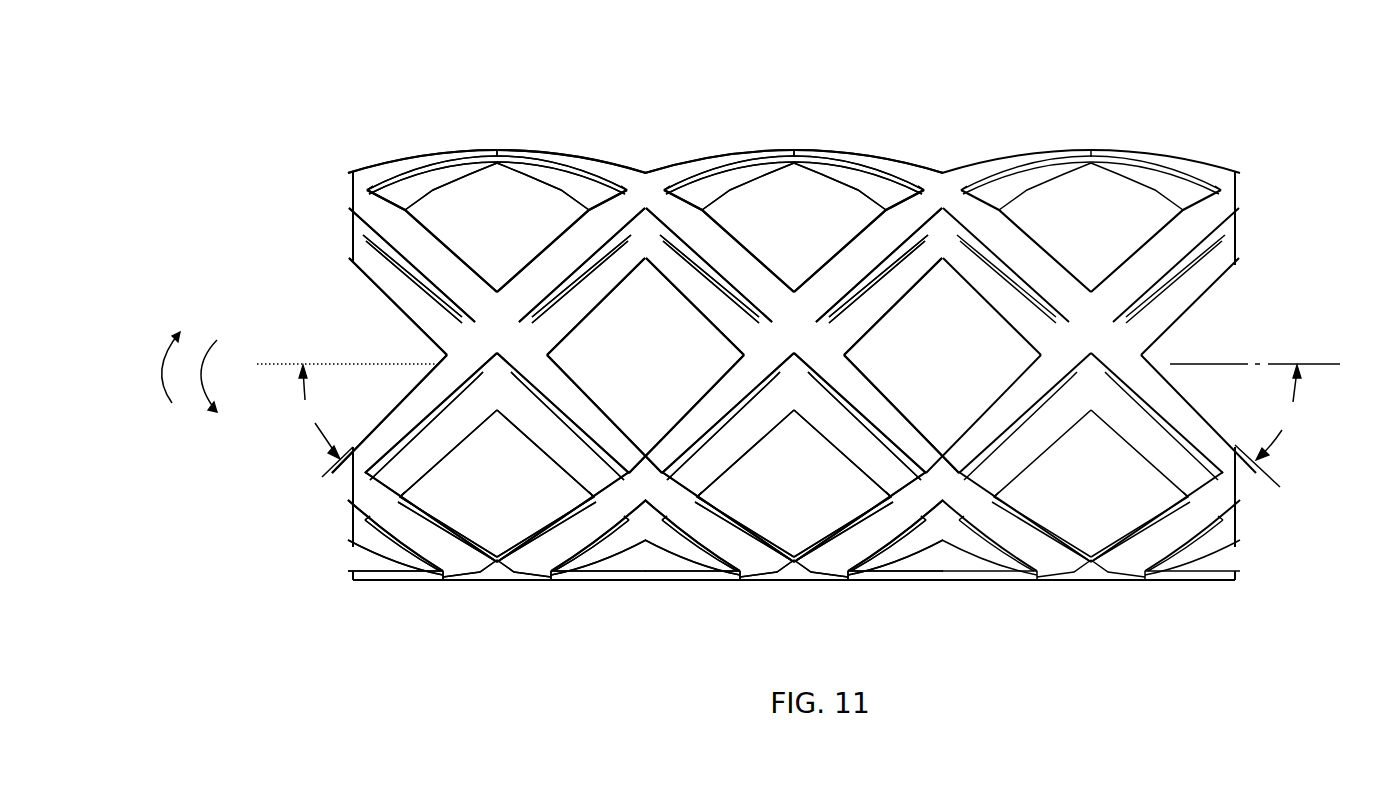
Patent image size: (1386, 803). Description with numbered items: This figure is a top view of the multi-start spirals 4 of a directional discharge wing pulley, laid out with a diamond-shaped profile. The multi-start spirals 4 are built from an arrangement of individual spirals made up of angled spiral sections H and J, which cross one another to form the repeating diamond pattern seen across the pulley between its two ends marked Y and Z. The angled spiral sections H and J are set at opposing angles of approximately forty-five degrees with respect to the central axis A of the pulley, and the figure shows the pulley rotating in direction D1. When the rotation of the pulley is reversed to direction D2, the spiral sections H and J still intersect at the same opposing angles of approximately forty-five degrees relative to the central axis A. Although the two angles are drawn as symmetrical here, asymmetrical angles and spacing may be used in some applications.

The multi-start spirals 4 is at (823, 290).
The angled spiral section H is at (745, 363).
The angled spiral section J is at (762, 278).
The first end Y is at (378, 178).
The second end Z is at (1213, 179).
The direction of rotation D1 is at (203, 361).
The direction of rotation D2 is at (193, 384).
The central axis A is at (797, 365).